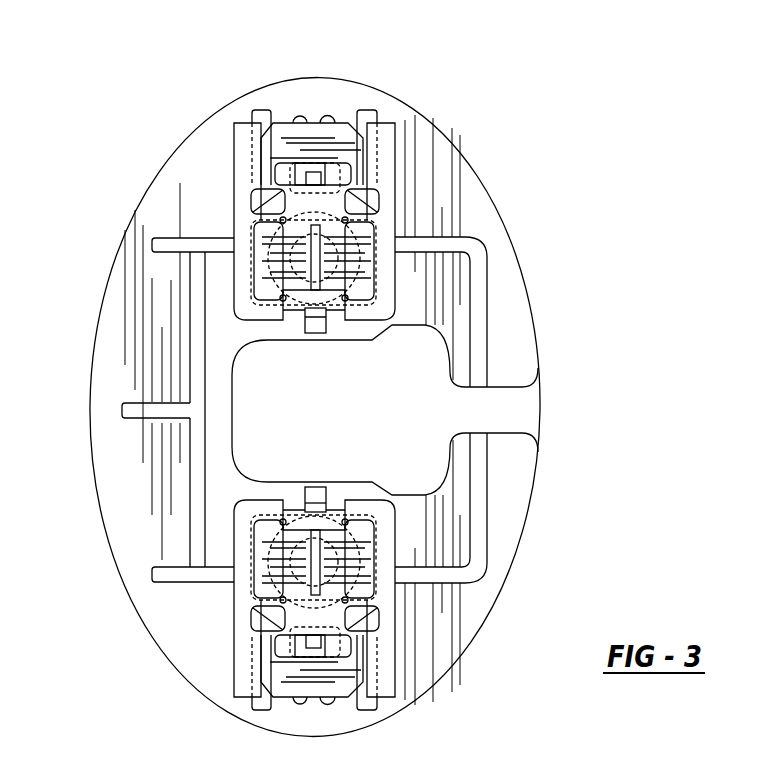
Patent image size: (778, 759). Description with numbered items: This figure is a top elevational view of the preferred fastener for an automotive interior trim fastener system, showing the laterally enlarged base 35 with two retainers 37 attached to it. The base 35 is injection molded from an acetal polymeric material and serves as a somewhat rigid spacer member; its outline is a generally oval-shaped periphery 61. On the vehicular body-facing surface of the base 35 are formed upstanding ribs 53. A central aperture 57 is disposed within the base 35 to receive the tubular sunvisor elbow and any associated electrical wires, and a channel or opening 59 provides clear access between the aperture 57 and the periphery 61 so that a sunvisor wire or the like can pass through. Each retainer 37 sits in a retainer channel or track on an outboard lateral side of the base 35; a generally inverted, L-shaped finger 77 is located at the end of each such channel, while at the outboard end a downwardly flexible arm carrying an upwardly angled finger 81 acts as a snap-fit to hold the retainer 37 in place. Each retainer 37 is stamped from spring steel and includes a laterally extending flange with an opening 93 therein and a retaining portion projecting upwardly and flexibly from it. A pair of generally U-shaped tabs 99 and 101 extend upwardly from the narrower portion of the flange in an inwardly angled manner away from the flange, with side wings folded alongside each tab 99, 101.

The base 35 is at (197, 163).
The retainer 37 is at (288, 130).
The upstanding rib 53 is at (477, 530).
The central aperture 57 is at (232, 422).
The channel or opening 59 is at (502, 432).
The periphery 61 is at (498, 213).
The L-shaped finger 77 is at (315, 490).
The upwardly angled finger 81 is at (317, 650).
The opening 93 is at (283, 647).
The U-shaped tab 99 is at (340, 592).
The U-shaped tab 101 is at (263, 587).